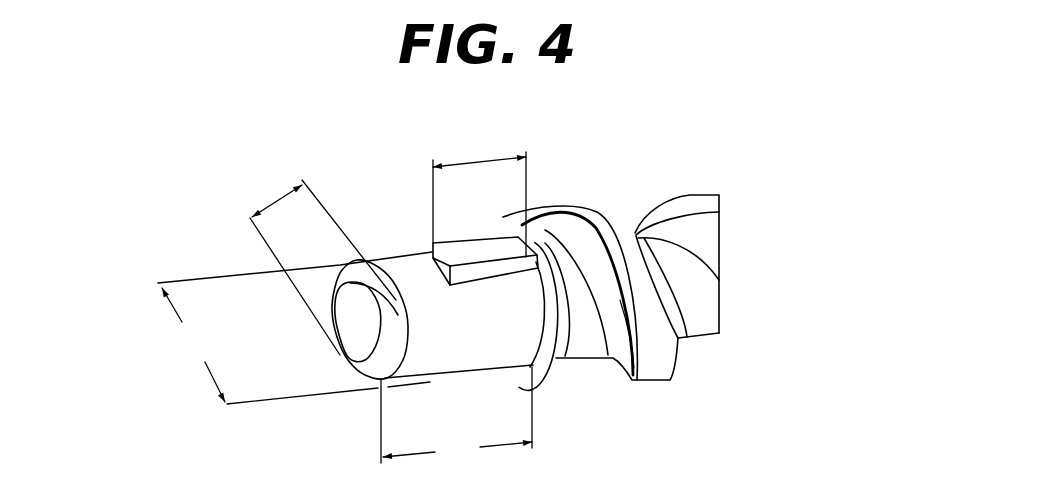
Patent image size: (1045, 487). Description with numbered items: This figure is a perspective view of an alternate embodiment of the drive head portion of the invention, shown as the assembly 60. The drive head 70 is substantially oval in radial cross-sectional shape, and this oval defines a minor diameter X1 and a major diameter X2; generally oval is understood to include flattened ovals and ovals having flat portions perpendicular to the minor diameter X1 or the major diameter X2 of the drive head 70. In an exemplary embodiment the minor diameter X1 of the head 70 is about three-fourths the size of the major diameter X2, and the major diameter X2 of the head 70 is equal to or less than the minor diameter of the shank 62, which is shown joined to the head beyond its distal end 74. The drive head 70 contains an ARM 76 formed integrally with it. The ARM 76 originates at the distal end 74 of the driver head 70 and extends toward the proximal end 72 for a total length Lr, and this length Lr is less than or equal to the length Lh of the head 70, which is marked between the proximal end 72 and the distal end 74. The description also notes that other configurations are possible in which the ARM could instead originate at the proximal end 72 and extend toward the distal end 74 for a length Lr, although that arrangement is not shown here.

The worm shaft assembly 60 is at (322, 143).
The shank 62 is at (617, 238).
The drive head 70 is at (405, 268).
The proximal end 72 is at (366, 337).
The distal end 74 is at (553, 363).
The ARM 76 is at (499, 252).
The minor diameter X1 is at (320, 259).
The major diameter X2 is at (296, 346).
The length of the ARM Lr is at (479, 191).
The length of the drive head Lh is at (456, 418).